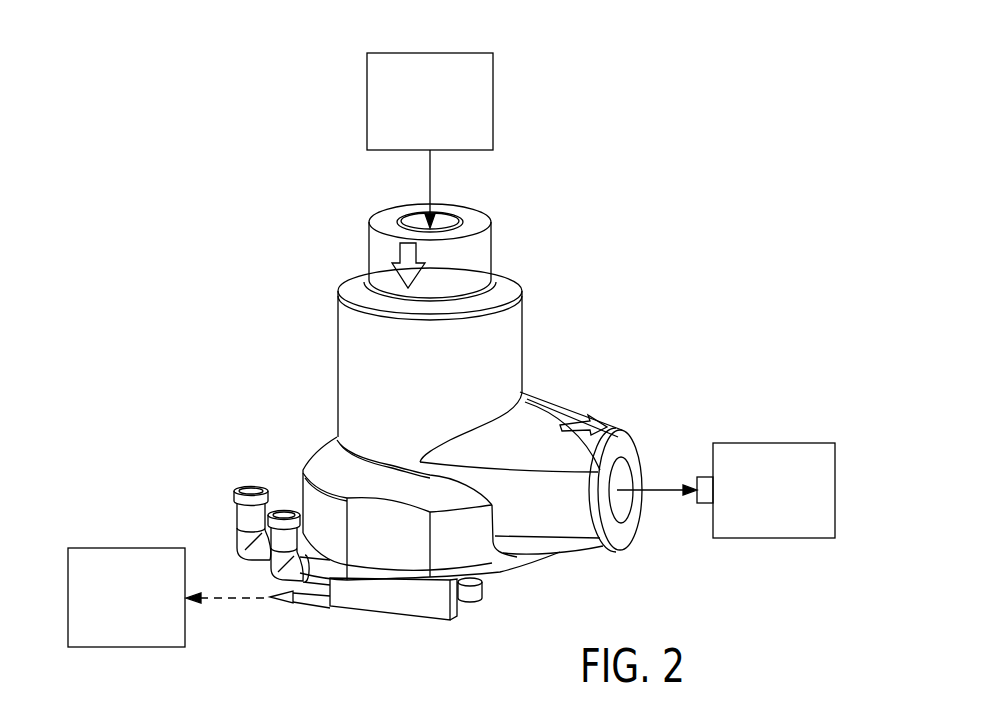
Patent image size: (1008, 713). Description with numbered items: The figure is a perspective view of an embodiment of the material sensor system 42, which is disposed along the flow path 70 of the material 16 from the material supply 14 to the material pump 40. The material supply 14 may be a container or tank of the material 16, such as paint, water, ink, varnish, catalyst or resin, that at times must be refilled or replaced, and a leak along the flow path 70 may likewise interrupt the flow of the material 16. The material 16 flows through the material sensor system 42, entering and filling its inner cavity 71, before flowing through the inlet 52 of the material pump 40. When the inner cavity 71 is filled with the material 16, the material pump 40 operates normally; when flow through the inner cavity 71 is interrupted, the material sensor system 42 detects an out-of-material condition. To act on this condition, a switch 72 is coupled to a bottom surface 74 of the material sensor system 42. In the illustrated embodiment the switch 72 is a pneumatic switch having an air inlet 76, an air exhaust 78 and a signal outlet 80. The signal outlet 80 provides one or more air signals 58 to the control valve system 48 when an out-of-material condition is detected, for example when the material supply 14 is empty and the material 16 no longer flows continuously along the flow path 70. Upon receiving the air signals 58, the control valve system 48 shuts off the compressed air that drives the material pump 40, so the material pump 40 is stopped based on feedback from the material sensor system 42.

The material supply 14 is at (493, 100).
The material 16 is at (430, 177).
The flow path 70 is at (399, 173).
The material sensor system 42 is at (738, 198).
The inner cavity 71 is at (480, 388).
The bottom surface 74 is at (505, 578).
The switch 72 is at (370, 615).
The signal outlet 80 is at (307, 608).
The air inlet 76 is at (253, 488).
The air exhaust 78 is at (293, 511).
The inlet 52 is at (703, 505).
The material pump 40 is at (762, 538).
The control valve system 48 is at (127, 648).
The air signals 58 is at (235, 600).